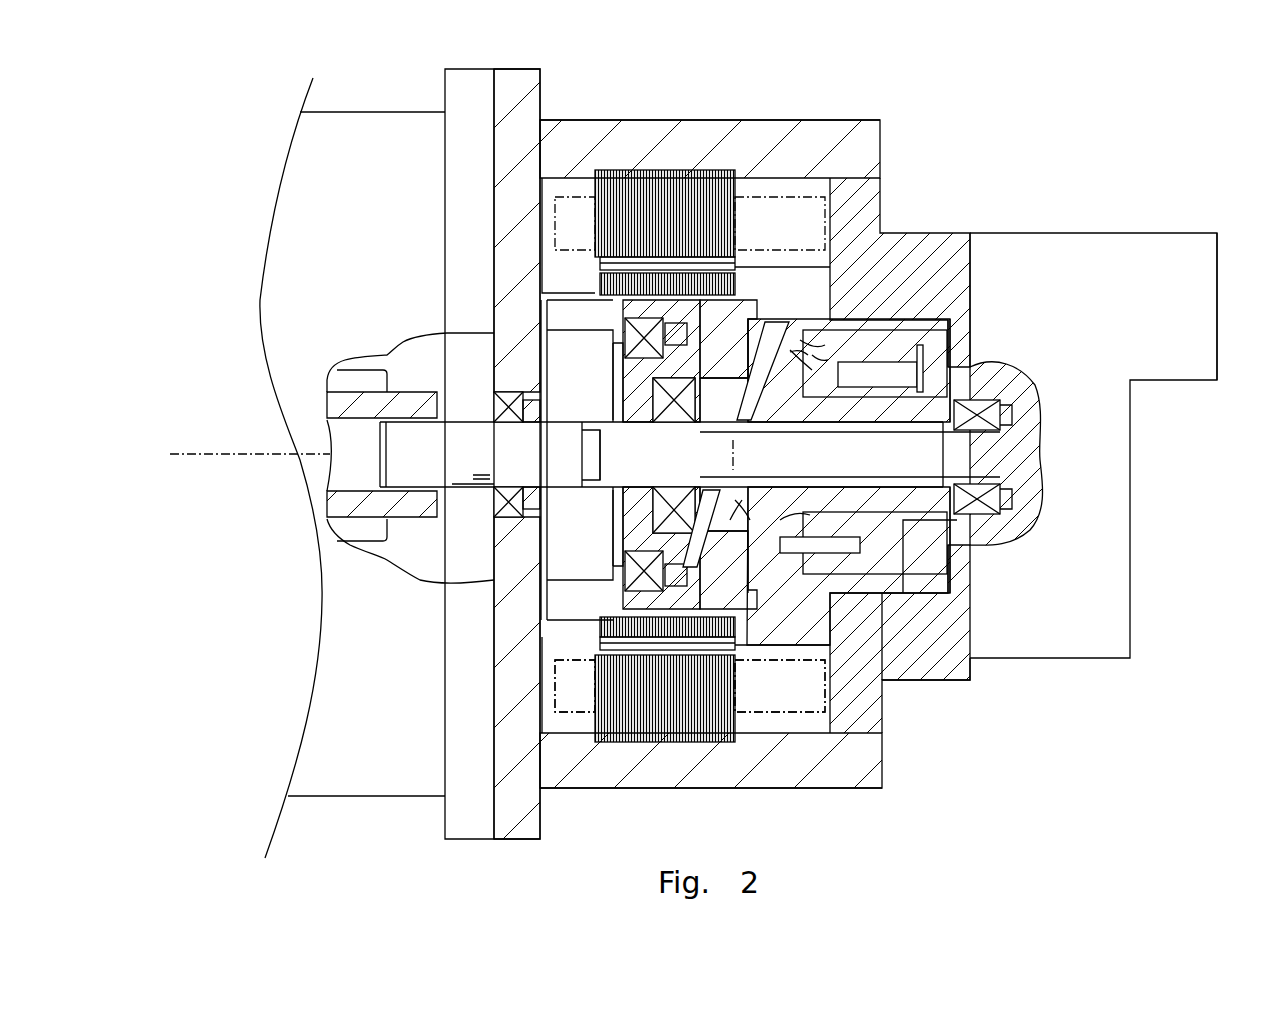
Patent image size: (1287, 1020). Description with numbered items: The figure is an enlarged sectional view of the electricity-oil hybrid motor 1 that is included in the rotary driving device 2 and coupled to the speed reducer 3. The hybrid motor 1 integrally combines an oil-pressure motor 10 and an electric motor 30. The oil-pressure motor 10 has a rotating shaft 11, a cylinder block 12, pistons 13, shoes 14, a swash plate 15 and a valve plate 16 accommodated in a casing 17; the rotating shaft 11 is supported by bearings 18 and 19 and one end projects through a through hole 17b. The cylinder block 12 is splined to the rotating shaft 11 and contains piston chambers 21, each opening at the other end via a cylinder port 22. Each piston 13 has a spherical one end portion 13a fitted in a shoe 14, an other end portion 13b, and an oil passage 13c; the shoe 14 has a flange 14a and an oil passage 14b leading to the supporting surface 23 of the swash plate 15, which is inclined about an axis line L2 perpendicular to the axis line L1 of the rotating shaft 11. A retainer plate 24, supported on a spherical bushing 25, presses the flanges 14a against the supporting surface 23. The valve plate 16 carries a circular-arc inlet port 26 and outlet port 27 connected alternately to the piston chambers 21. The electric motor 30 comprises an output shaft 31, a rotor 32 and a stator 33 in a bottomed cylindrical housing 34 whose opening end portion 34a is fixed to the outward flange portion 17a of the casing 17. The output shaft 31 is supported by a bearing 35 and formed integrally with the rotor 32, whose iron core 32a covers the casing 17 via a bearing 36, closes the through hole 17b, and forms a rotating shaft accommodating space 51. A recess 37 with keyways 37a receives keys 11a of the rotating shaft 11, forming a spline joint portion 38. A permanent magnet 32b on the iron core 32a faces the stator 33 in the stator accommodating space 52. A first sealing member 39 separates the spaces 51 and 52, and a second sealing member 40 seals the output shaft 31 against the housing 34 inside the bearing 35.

The electricity-oil hybrid motor 1 is at (1010, 108).
The rotary driving device 2 is at (596, 94).
The speed reducer 3 is at (385, 125).
The oil-pressure motor 10 is at (964, 188).
The rotating shaft 11 is at (613, 400).
The keys 11a is at (590, 425).
The cylinder block 12 is at (940, 585).
The pistons 13 is at (900, 355).
The one end portion 13a is at (840, 355).
The other end portion 13b is at (925, 330).
The oil passage 13c is at (858, 378).
The shoes 14 is at (815, 352).
The flange 14a is at (790, 352).
The oil passage 14b is at (815, 355).
The swash plate 15 is at (758, 345).
The valve plate 16 is at (948, 393).
The casing 17 is at (940, 248).
The outward flange portion 17a is at (880, 768).
The through hole 17b is at (600, 500).
The bearing 18 is at (668, 428).
The bearing 19 is at (990, 414).
The piston chambers 21 is at (910, 580).
The cylinder port 22 is at (935, 505).
The supporting surface 23 is at (740, 500).
The retainer plate 24 is at (742, 500).
The spherical bushing 25 is at (795, 432).
The inlet port 26 is at (950, 355).
The outlet port 27 is at (962, 530).
The electric motor 30 is at (818, 116).
The output shaft 31 is at (462, 420).
The rotor 32 is at (403, 632).
The iron core 32a is at (600, 630).
The permanent magnet 32b is at (600, 672).
The stator 33 is at (678, 742).
The housing 34 is at (755, 138).
The opening end portion 34a is at (820, 788).
The bearing 35 is at (515, 520).
The bearing 36 is at (548, 560).
The recess 37 is at (585, 490).
The keyways 37a is at (602, 440).
The spline joint portion 38 is at (530, 445).
The first sealing member 39 is at (655, 330).
The second sealing member 40 is at (527, 400).
The rotating shaft accommodating space 51 is at (655, 415).
The stator accommodating space 52 is at (580, 185).
The axis line L1 is at (228, 460).
The axis line L2 is at (733, 440).